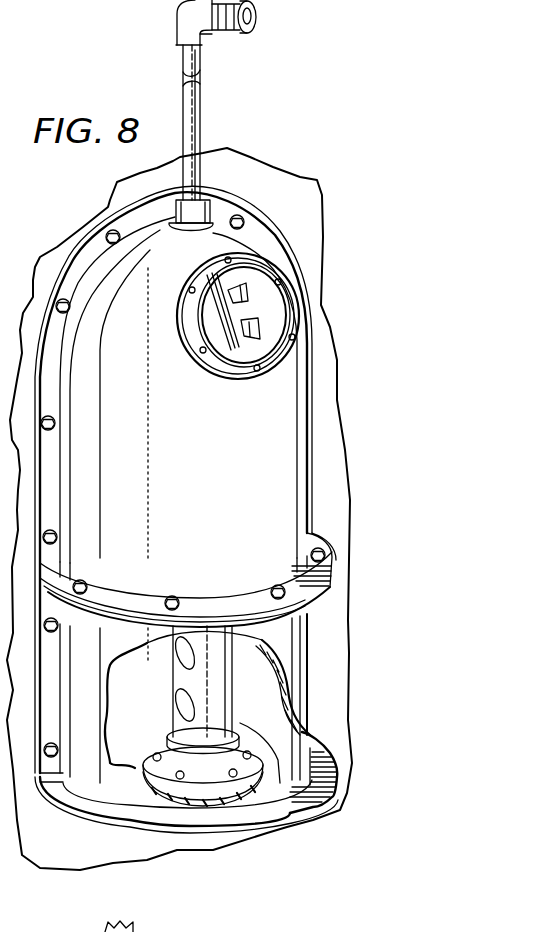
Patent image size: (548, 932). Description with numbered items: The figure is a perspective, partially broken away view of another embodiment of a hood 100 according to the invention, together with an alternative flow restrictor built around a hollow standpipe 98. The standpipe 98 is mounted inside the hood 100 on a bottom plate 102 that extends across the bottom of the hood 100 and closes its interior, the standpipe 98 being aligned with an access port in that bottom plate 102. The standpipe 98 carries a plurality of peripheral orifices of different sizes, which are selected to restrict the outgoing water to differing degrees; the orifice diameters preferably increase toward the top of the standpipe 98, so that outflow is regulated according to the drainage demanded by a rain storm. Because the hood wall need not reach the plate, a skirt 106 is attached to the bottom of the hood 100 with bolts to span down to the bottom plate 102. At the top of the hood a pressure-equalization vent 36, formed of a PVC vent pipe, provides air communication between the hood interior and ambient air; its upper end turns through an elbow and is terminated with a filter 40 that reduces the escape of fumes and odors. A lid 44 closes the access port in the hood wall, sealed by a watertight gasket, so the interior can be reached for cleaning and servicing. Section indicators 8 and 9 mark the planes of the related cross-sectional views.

The section line 8- 8 is at (235, 870).
The section line 9- 9 is at (110, 718).
The pressure-equalization vent 36 is at (195, 140).
The filter 40 is at (256, 24).
The lid 44 is at (241, 347).
The hollow standpipe 98 is at (215, 698).
The hood 100 is at (22, 264).
The bottom plate 102 is at (137, 768).
The skirt 106 is at (320, 745).